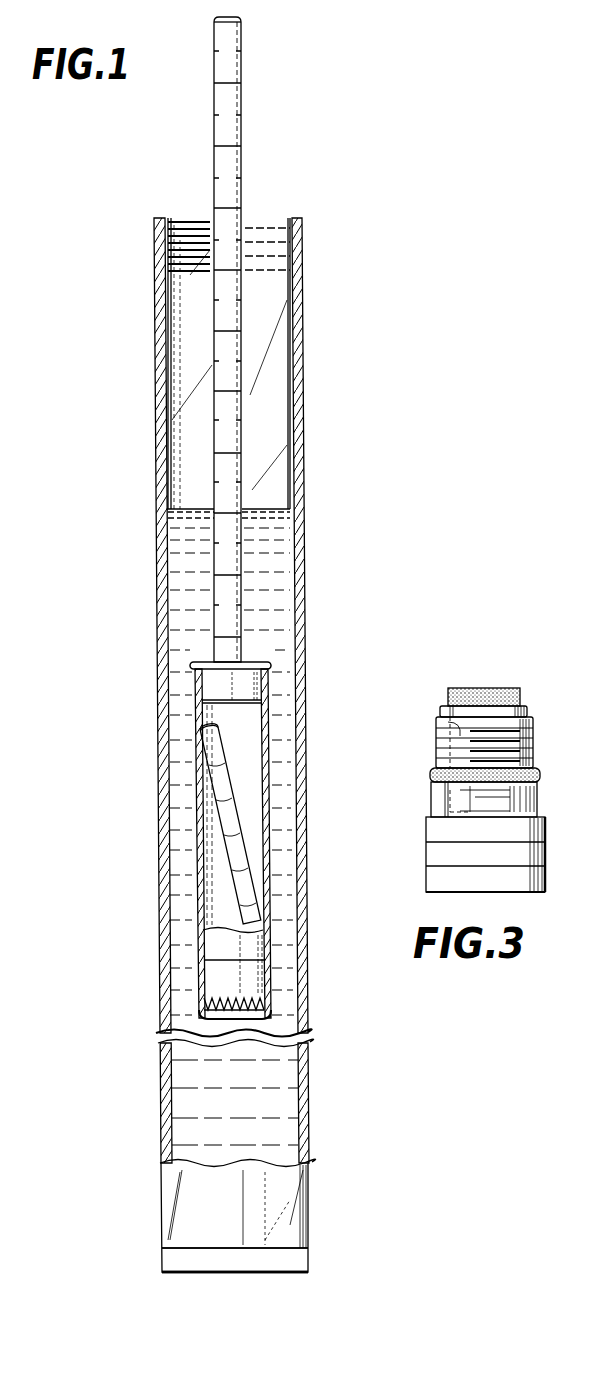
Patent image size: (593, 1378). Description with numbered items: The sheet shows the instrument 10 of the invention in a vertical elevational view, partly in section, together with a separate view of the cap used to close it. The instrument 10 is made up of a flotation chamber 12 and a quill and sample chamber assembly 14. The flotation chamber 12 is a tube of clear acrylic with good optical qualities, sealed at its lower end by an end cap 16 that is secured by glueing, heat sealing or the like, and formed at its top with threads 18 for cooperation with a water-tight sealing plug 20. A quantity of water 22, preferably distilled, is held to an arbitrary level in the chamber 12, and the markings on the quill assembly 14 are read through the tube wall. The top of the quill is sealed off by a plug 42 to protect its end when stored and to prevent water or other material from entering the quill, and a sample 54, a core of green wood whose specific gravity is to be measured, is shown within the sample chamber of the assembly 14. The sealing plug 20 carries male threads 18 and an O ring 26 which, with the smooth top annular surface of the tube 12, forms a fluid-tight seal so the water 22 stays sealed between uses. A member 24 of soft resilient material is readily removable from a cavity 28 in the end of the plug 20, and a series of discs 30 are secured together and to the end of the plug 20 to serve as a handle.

In FIG. 1, the instrument 10 is at (306, 192).
In FIG. 1, the flotation chamber 12 is at (157, 360).
In FIG. 1, the quill and sample chamber assembly 14 is at (262, 656).
In FIG. 1, the end cap 16 is at (165, 1254).
In FIG. 1, the threads 18 is at (172, 222).
In FIG. 3, the threads 18 is at (533, 752).
In FIG. 3, the sealing plug 20 is at (541, 694).
In FIG. 1, the water 22 is at (175, 585).
In FIG. 3, the member of soft resilient material 24 is at (461, 688).
In FIG. 3, the O ring 26 is at (430, 775).
In FIG. 3, the cavity 28 is at (435, 712).
In FIG. 3, the discs 30 is at (433, 878).
In FIG. 1, the plug 42 is at (241, 20).
In FIG. 1, the sample 54 is at (228, 800).